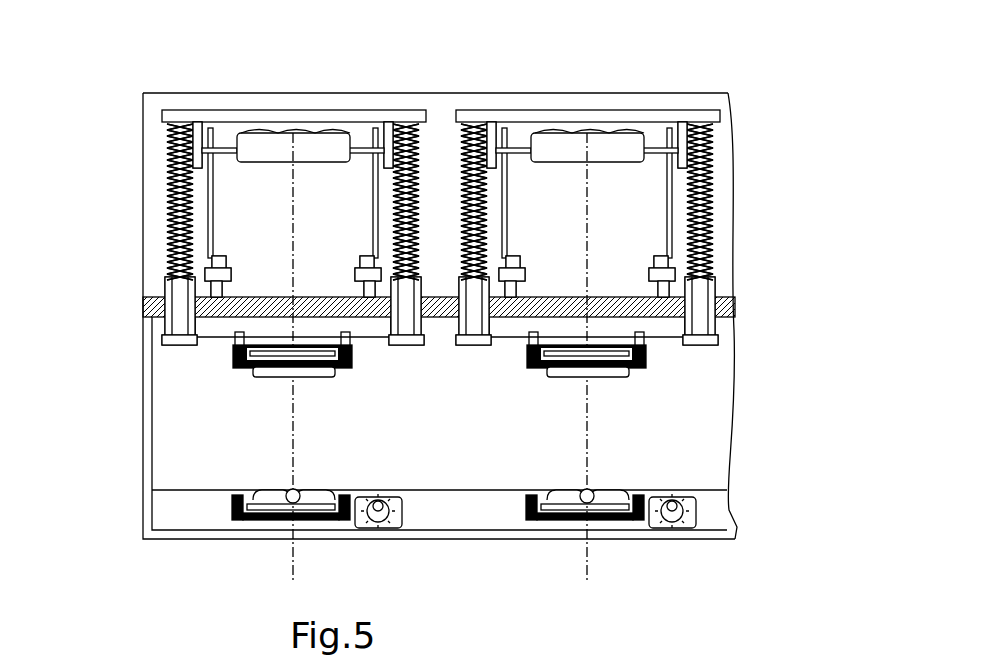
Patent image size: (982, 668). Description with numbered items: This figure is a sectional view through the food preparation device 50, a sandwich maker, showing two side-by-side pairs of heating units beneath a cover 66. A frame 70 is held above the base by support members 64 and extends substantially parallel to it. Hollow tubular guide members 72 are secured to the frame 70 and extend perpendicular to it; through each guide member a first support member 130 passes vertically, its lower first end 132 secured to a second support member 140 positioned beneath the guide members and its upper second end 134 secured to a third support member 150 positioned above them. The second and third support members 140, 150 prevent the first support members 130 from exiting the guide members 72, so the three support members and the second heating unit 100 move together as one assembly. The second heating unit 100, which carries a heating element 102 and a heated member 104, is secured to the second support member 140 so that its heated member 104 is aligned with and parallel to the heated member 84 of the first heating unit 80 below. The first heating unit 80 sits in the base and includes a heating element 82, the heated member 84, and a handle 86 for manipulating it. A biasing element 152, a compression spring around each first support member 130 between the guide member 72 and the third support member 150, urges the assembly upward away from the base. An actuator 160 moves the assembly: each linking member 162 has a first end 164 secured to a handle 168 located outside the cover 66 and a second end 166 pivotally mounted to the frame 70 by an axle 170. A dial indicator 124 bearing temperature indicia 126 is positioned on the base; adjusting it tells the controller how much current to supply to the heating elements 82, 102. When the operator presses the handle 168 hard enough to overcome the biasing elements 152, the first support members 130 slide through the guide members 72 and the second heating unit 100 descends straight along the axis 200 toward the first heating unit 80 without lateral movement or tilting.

The food preparation device 50 is at (141, 67).
The support members 64 is at (148, 400).
The cover 66 is at (697, 93).
The frame 70 is at (272, 297).
The guide members 72 is at (170, 290).
The first heating unit 80 is at (300, 486).
The heating element 82 is at (310, 508).
The heated member 84 is at (262, 497).
The handle 86 is at (290, 488).
The second heating unit 100 is at (326, 383).
The heating element 102 is at (277, 358).
The heated member 104 is at (288, 375).
The dial indicator 124 is at (382, 532).
The temperature indicia 126 is at (407, 517).
The first support members 130 is at (172, 205).
The first ends 132 is at (180, 325).
The second ends 134 is at (172, 137).
The second support member 140 is at (205, 345).
The third support member 150 is at (346, 112).
The biasing element 152 is at (172, 182).
The actuator 160 is at (311, 135).
The linking members 162 is at (373, 235).
The first end 164 is at (170, 128).
The second end 166 is at (213, 263).
The handle 168 is at (262, 135).
The axle 170 is at (205, 282).
The axis 200 is at (290, 562).